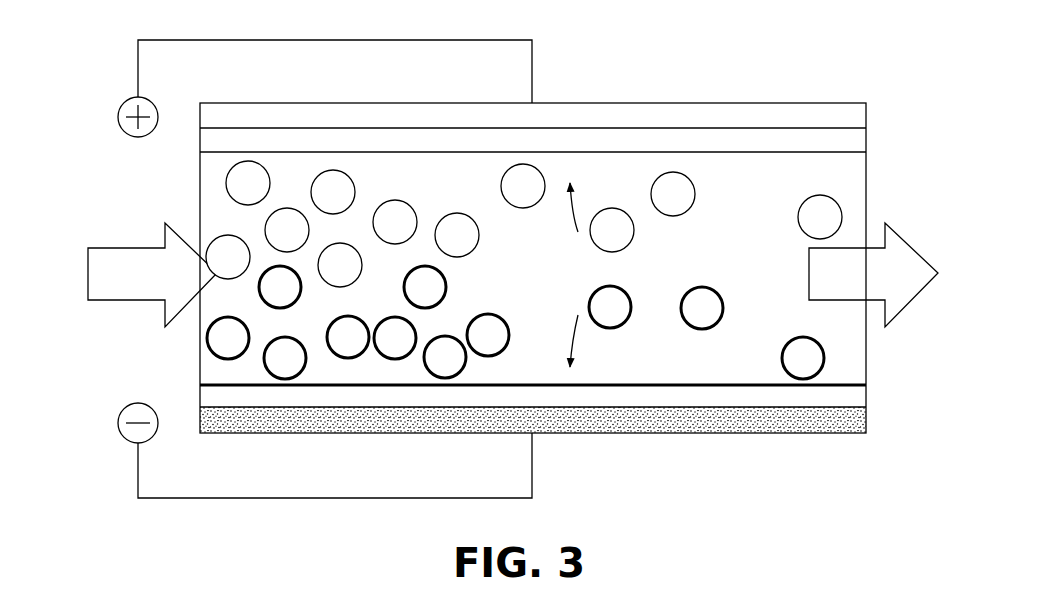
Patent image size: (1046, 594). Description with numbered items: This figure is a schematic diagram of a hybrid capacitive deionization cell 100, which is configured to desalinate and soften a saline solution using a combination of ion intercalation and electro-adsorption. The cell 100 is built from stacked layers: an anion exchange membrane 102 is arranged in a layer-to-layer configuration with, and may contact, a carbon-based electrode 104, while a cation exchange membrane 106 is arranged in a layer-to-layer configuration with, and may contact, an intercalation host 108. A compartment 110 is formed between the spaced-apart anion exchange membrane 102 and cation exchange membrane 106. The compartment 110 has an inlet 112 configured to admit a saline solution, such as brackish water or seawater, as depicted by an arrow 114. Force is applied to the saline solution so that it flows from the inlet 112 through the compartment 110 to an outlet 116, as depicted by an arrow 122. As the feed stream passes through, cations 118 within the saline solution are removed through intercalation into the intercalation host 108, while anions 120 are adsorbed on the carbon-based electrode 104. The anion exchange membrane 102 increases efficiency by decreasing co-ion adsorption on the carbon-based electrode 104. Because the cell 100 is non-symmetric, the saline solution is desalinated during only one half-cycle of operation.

The hybrid capacitive deionization cell 100 is at (818, 462).
The anion exchange membrane 102 is at (198, 140).
The carbon-based electrode 104 is at (767, 103).
The cation exchange membrane 106 is at (866, 397).
The intercalation host 108 is at (770, 433).
The compartment 110 is at (764, 204).
The inlet 112 is at (215, 371).
The arrow 114 is at (88, 274).
The outlet 116 is at (855, 337).
The cations 118 is at (446, 378).
The anions 120 is at (842, 217).
The arrow 122 is at (917, 248).